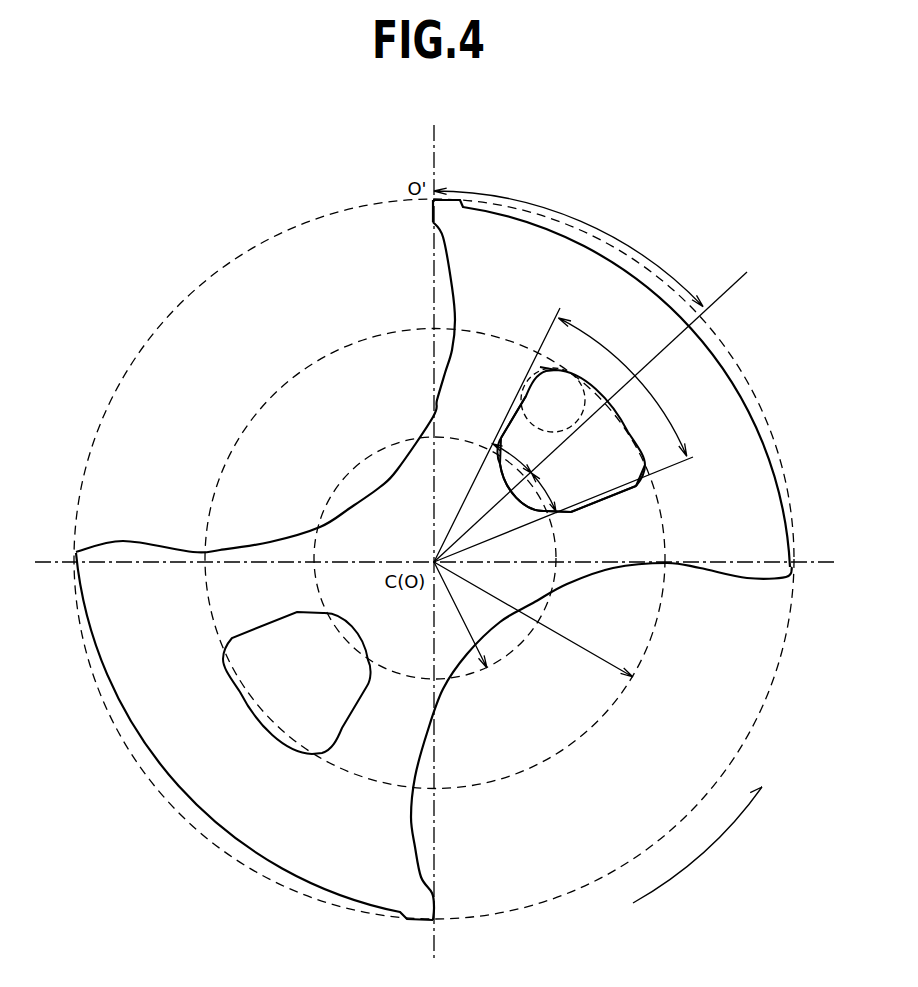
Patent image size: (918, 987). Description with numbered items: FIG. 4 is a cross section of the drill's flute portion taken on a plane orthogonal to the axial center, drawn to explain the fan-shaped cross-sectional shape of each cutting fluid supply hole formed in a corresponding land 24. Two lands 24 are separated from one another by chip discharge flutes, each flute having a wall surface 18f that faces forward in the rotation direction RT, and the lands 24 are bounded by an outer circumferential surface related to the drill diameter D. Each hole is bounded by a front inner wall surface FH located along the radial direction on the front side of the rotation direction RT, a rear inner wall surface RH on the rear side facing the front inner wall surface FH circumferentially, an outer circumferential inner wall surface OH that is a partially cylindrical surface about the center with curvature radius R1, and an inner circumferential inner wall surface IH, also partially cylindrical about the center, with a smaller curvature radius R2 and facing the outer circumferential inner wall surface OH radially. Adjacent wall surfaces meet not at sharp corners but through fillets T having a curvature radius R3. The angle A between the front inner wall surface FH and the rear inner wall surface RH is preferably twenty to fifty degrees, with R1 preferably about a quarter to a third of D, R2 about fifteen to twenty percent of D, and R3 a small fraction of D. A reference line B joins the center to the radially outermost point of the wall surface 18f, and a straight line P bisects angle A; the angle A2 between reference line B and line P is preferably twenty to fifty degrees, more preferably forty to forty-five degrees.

The land 24 is at (765, 503).
The wall surface facing forward in the rotation direction 18f is at (447, 268).
The outer circumferential inner wall surface OH is at (575, 373).
The curvature radius of the outer circumferential inner wall surface R1 is at (435, 559).
The curvature radius of the inner circumferential inner wall surface R2 is at (435, 558).
The curvature radius of the fillet R3 is at (540, 354).
The reference line B is at (434, 532).
The drill diameter D is at (250, 247).
The straight line OP P is at (598, 409).
The angle defined by the front and rear inner wall surfaces A is at (590, 415).
The angle defined by reference line OO' and straight line OP A2 is at (568, 246).
The rotation direction RT is at (704, 833).
The fillet T is at (540, 367).
The front inner wall surface FH is at (508, 417).
The inner circumferential inner wall surface IH is at (512, 468).
The rear inner wall surface RH is at (603, 493).